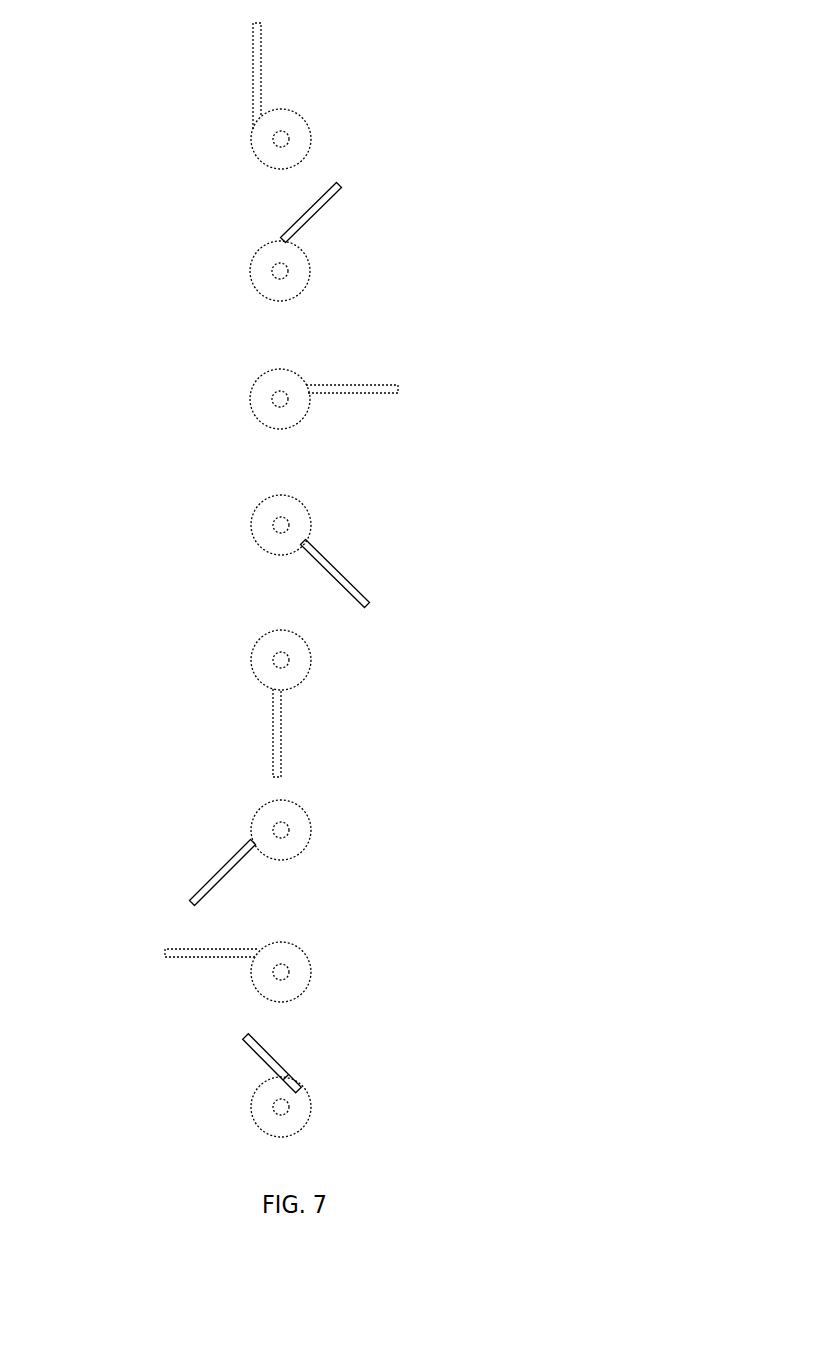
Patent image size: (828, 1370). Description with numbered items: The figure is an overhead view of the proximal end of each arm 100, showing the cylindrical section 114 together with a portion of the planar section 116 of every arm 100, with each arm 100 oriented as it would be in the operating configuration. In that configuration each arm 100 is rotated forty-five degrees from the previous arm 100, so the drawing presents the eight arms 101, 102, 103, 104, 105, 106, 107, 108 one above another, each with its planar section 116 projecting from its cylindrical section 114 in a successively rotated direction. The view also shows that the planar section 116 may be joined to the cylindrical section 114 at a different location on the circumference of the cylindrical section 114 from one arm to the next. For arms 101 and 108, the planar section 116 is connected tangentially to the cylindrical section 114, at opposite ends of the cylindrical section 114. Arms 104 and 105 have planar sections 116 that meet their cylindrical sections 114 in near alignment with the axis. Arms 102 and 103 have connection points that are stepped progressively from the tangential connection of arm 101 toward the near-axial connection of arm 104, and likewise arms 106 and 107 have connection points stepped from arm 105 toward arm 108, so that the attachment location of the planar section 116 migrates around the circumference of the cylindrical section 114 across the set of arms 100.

The arm 100 is at (425, 1117).
The arm 101 is at (142, 120).
The arm 102 is at (142, 268).
The arm 103 is at (142, 398).
The arm 104 is at (142, 530).
The arm 105 is at (142, 663).
The arm 106 is at (142, 839).
The arm 107 is at (142, 969).
The arm 108 is at (142, 1091).
The cylindrical section 114 is at (305, 128).
The planar section 116 is at (257, 77).